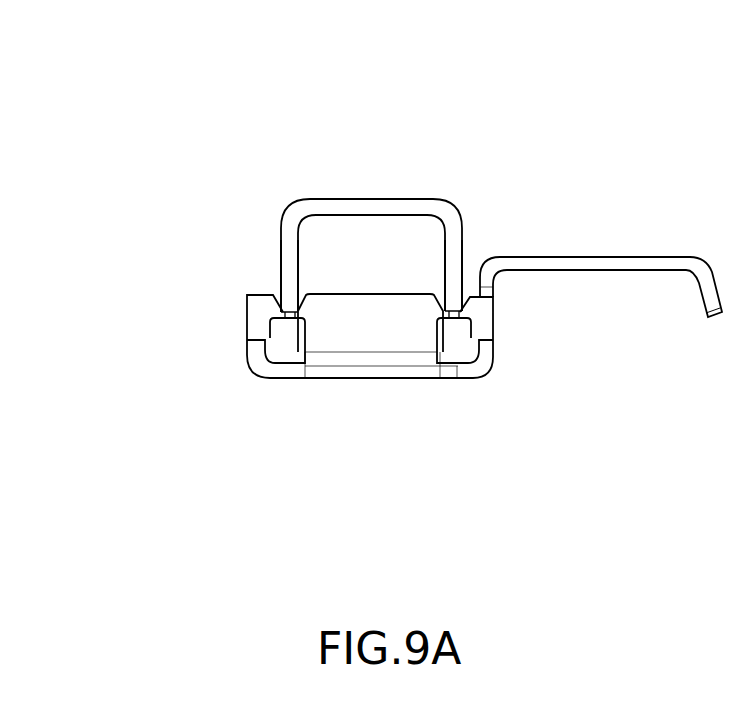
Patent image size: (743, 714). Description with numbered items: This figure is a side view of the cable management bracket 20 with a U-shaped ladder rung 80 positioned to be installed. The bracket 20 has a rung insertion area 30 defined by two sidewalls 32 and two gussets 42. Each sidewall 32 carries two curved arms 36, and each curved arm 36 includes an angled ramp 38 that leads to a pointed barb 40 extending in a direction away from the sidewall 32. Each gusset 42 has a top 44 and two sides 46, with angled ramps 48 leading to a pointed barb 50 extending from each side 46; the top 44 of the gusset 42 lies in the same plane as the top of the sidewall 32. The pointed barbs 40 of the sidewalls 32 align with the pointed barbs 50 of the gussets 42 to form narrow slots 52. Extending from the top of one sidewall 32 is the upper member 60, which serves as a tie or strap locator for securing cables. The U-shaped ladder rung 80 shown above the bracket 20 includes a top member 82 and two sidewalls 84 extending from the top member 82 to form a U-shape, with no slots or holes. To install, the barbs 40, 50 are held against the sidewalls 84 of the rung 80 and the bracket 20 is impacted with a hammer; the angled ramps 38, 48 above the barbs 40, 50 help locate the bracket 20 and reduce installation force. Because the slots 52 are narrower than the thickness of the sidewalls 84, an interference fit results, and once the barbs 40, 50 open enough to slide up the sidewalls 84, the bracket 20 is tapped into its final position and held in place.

The bracket 20 is at (612, 438).
The rung insertion area 30 is at (218, 382).
The sidewall 32 is at (496, 323).
The curved arm 36 is at (494, 336).
The angled ramp 38 is at (466, 302).
The pointed barb 40 is at (458, 318).
The gusset 42 is at (330, 332).
The top 44 is at (392, 293).
The side 46 is at (458, 320).
The angled ramp 48 is at (443, 299).
The pointed barb 50 is at (450, 335).
The slot 52 is at (465, 300).
The upper member 60 is at (645, 215).
The U-shaped ladder rung 80 is at (360, 153).
The top member 82 is at (394, 206).
The sidewall 84 is at (451, 250).